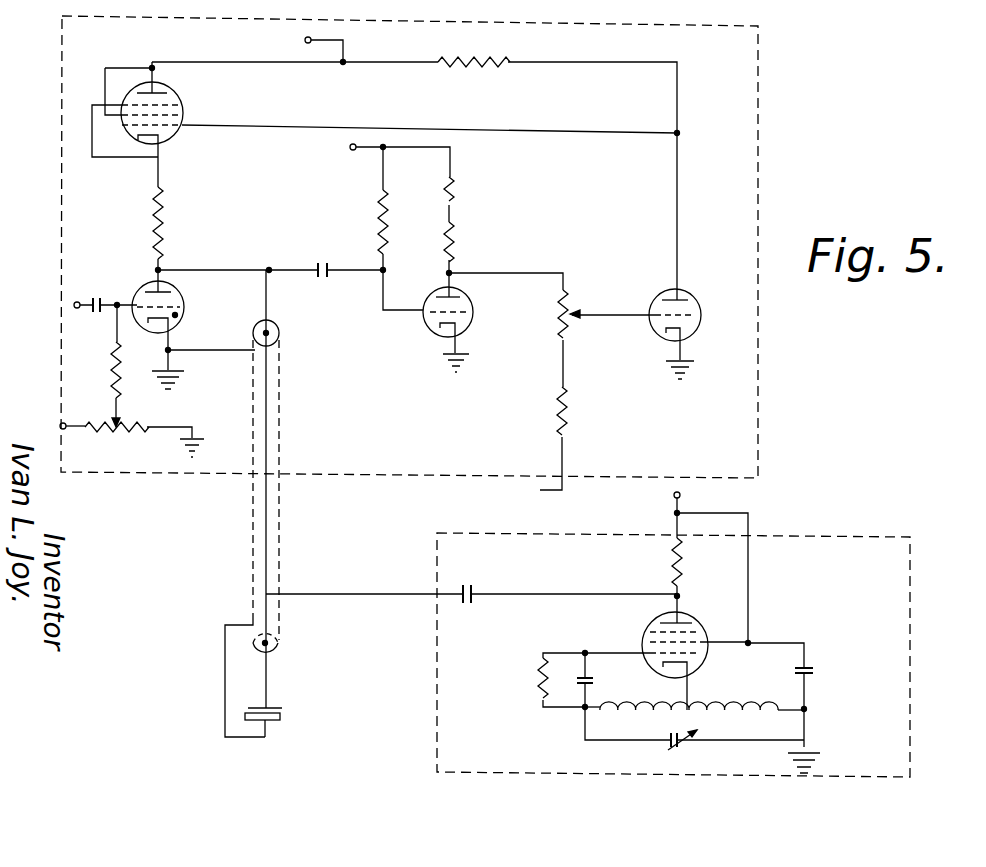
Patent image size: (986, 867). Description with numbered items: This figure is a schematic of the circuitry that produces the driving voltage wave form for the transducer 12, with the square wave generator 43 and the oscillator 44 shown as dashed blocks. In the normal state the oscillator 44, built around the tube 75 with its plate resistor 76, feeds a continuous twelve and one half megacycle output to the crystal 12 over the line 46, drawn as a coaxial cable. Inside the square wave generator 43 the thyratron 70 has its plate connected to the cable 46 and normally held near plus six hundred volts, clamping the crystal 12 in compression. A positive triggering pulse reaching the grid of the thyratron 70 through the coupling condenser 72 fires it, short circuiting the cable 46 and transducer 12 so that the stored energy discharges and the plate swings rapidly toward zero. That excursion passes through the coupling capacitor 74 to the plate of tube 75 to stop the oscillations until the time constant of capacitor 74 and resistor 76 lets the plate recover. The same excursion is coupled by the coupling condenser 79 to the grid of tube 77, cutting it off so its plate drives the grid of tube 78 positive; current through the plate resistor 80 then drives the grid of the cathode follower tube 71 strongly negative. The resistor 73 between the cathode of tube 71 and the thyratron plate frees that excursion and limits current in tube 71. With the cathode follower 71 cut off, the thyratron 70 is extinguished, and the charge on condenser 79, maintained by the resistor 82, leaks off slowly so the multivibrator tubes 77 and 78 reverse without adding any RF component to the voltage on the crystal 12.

The transducer 12 is at (278, 717).
The square wave generator 43 is at (758, 97).
The 12.5 megacycle oscillator 44 is at (845, 536).
The line 46 is at (280, 643).
The thyratron 70 is at (182, 297).
The cathode follower tube 71 is at (180, 106).
The coupling condenser 72 is at (92, 310).
The resistor 73 is at (155, 214).
The coupling capacitor 74 is at (473, 590).
The tube 75 is at (695, 625).
The plate resistor 76 is at (682, 570).
The tube 77 is at (463, 302).
The tube 78 is at (692, 303).
The coupling condenser 79 is at (317, 267).
The plate resistor 80 is at (482, 68).
The 3.3 megohm resistor 82 is at (384, 213).